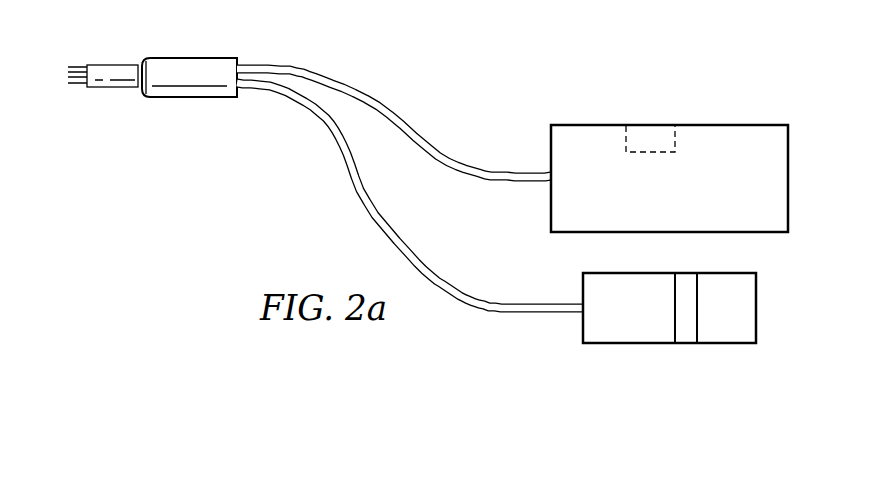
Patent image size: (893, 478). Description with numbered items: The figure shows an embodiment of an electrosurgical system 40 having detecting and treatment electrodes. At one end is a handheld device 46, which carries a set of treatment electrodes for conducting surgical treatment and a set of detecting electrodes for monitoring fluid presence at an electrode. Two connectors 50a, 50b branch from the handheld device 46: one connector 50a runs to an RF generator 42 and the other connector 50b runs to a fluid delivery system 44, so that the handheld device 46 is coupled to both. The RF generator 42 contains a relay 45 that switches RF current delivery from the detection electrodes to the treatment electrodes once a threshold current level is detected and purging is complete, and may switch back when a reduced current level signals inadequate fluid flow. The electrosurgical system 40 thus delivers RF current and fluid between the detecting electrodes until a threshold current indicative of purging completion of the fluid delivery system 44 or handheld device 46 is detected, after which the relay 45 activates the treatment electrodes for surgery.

The electrosurgical system 40 is at (563, 70).
The RF generator 42 is at (720, 125).
The fluid delivery system 44 is at (756, 308).
The relay 45 is at (650, 152).
The handheld device 46 is at (160, 58).
The connector 50a is at (380, 100).
The connector 50b is at (370, 210).